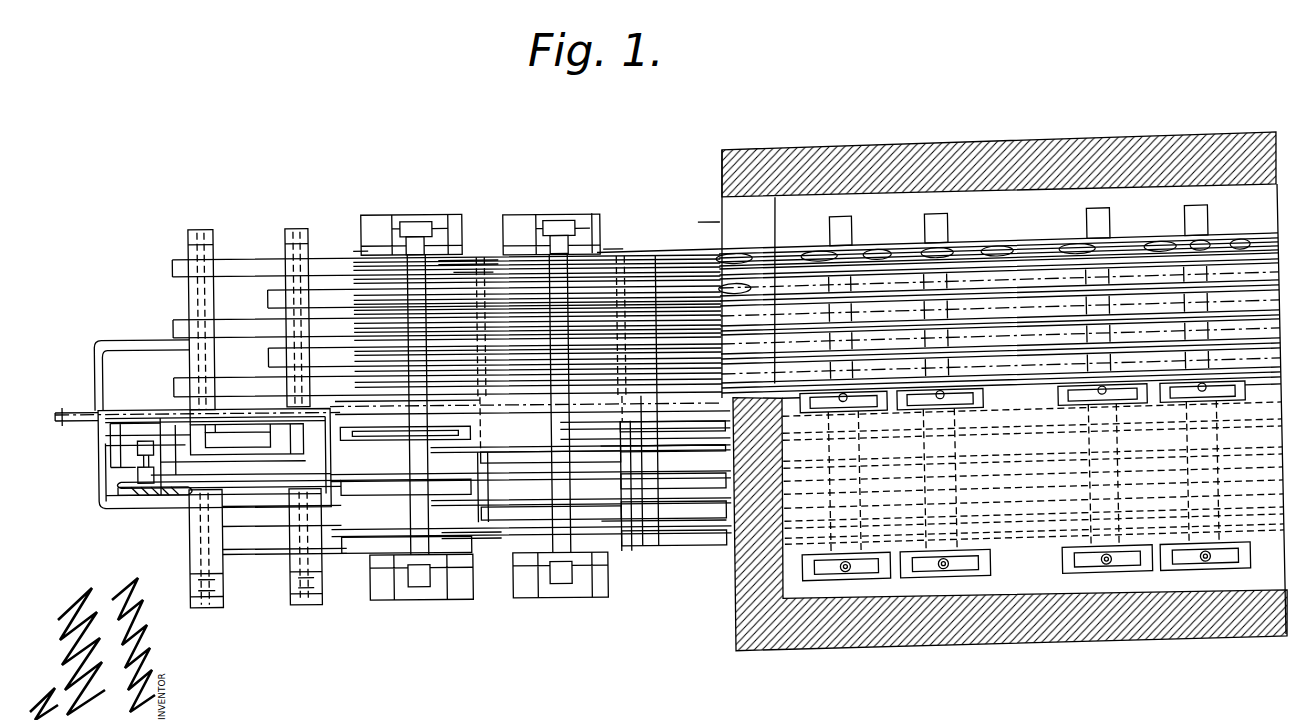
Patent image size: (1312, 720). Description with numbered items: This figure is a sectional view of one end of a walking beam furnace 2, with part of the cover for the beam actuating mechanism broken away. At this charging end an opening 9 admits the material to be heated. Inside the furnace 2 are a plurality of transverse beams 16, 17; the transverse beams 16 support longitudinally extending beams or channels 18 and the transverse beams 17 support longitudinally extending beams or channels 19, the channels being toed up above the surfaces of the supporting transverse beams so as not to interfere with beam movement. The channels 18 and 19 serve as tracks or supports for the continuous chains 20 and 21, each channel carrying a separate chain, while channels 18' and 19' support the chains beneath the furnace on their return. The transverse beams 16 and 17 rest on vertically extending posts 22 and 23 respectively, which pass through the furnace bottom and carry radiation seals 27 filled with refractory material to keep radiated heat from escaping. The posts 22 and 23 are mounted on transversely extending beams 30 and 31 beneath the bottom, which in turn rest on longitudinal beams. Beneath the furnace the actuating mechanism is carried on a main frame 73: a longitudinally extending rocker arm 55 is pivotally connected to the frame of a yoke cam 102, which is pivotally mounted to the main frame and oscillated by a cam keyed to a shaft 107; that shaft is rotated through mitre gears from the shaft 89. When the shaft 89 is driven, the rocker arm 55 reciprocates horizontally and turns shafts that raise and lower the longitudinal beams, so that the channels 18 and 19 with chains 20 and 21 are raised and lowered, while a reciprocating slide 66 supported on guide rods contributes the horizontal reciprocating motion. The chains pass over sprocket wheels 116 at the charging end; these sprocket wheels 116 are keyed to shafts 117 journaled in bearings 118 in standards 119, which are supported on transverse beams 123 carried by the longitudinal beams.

The furnace 2 is at (966, 165).
The opening 9 is at (722, 222).
The transverse beams 16 is at (190, 238).
The transverse beams 17 is at (287, 238).
The longitudinally extending beams or channels 18 is at (999, 279).
The longitudinally extending beams or channels 19 is at (472, 324).
The chains 20 is at (862, 264).
The chains 21 is at (740, 284).
The vertically extending posts 22 is at (1100, 405).
The vertically extending posts 23 is at (1210, 405).
The radiation seals 27 is at (925, 414).
The transversely extending beams 30 is at (188, 559).
The transversely extending beams 31 is at (288, 559).
The longitudinally extending rocker arm 55 is at (275, 486).
The reciprocating slide 66 is at (190, 415).
The main frame 73 is at (98, 440).
The shaft 89 is at (72, 404).
The yoke cam 102 is at (135, 491).
The shaft 107 is at (137, 456).
The sprocket wheels 116 is at (515, 258).
The shafts 117 is at (455, 240).
The bearings 118 is at (412, 222).
The standards 119 is at (372, 226).
The transverse beams 123 is at (360, 252).
The channels 18' is at (664, 518).
The channels 19' is at (664, 529).